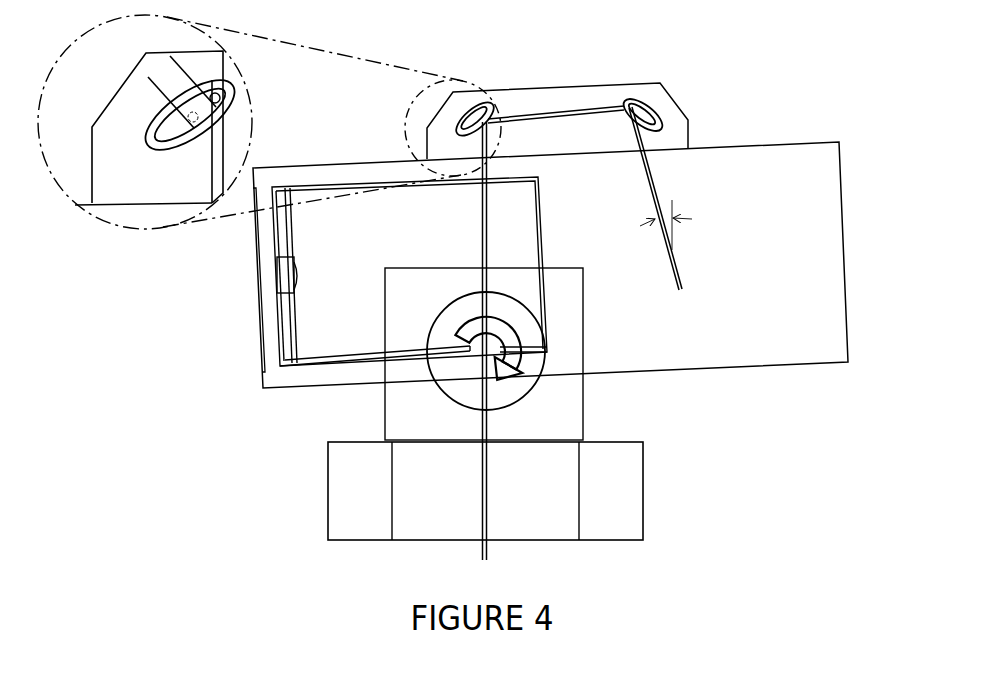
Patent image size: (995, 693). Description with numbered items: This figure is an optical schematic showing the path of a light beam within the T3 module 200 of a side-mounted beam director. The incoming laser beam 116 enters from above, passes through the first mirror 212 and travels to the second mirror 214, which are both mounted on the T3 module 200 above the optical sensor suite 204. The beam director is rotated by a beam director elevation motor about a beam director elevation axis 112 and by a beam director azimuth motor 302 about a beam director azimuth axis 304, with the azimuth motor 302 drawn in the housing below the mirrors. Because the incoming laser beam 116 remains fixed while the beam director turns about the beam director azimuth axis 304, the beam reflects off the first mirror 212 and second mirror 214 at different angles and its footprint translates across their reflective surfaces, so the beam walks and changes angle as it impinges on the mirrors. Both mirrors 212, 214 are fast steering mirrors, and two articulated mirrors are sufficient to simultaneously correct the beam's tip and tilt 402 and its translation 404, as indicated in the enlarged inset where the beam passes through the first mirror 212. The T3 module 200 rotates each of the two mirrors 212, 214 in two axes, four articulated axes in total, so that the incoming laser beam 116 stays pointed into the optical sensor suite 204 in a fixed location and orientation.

The beam director elevation axis 112 is at (644, 500).
The incoming laser beam 116 is at (571, 106).
The T3 module 200 is at (678, 97).
The optical sensor suite 204 is at (819, 165).
The first mirror 212 is at (473, 104).
The second mirror 214 is at (639, 95).
The beam director azimuth motor 302 is at (545, 363).
The beam director azimuth axis 304 is at (468, 368).
The tip and tilt 402 is at (683, 198).
The translation 404 is at (193, 62).